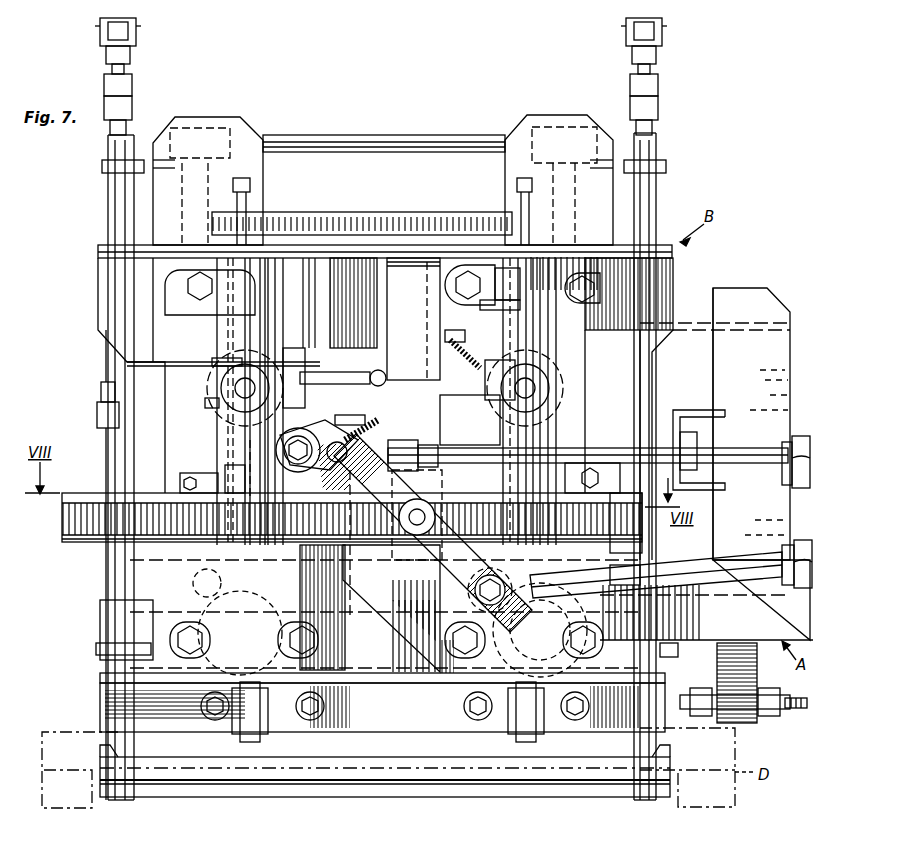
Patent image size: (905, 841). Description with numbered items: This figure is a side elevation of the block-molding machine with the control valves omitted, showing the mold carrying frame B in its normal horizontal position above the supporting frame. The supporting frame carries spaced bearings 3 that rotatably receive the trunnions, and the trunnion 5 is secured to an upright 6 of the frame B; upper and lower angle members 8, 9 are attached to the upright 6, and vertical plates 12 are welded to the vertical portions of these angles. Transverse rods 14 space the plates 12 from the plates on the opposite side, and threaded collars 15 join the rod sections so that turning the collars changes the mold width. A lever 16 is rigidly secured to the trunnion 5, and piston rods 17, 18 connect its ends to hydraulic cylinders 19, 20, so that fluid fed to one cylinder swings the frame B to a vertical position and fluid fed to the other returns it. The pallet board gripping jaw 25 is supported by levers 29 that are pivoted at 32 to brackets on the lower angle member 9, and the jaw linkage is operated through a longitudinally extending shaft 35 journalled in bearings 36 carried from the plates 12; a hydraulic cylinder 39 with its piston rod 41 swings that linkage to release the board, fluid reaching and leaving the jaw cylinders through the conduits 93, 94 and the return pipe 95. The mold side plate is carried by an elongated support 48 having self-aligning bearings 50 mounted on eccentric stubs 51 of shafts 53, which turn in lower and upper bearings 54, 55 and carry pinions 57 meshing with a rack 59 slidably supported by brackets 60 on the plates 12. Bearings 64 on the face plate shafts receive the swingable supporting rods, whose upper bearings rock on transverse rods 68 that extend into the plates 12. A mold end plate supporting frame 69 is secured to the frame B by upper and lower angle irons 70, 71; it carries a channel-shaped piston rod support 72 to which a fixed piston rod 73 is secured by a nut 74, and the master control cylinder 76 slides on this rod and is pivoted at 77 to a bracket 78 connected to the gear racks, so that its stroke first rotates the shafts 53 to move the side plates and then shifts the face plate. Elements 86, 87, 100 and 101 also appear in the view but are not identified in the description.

The bearings 3 is at (315, 536).
The trunnion 5 is at (410, 540).
The upright 6 is at (430, 430).
The upper angle member 8 is at (98, 254).
The lower angle member 9 is at (100, 619).
The vertical plates 12 is at (170, 132).
The transverse rods 14 is at (622, 548).
The threaded collars 15 is at (235, 370).
The lever 16 is at (432, 540).
The piston rod 17 is at (665, 566).
The piston rod 18 is at (620, 448).
The hydraulic cylinder 19 is at (804, 548).
The hydraulic cylinder 20 is at (804, 452).
The jaw 25 is at (322, 790).
The levers 29 is at (114, 207).
The pivot 32 is at (98, 649).
The longitudinally-extending shaft 35 is at (400, 145).
The bearings 36 is at (215, 130).
The hydraulic cylinder 39 is at (106, 441).
The piston rod 41 is at (112, 359).
The elongated support 48 is at (184, 724).
The self-aligning bearings 50 is at (216, 722).
The eccentric stub 51 is at (250, 740).
The shafts 53 is at (215, 385).
The lower bearings 54 is at (192, 633).
The upper bearings 55 is at (212, 366).
The pinions 57 is at (215, 490).
The rack 59 is at (88, 540).
The brackets 60 is at (260, 475).
The bearings 64 is at (215, 418).
The upper transverse rods 68 is at (205, 404).
The mold end plate supporting frame 69 is at (768, 350).
The upper angle iron 70 is at (693, 290).
The lower angle iron 71 is at (700, 600).
The channel-shaped piston rod support 72 is at (688, 410).
The fixed piston rod 73 is at (658, 430).
The nut 74 is at (695, 445).
The master control cylinder 76 is at (355, 420).
The pivot 77 is at (290, 447).
The bracket 78 is at (283, 395).
The beam 86 is at (352, 212).
The bolt 87 is at (520, 226).
The conduit 93 is at (395, 445).
The conduit 94 is at (372, 420).
The return pipe 95 is at (693, 690).
The spring 100 is at (462, 355).
The rod 101 is at (368, 372).